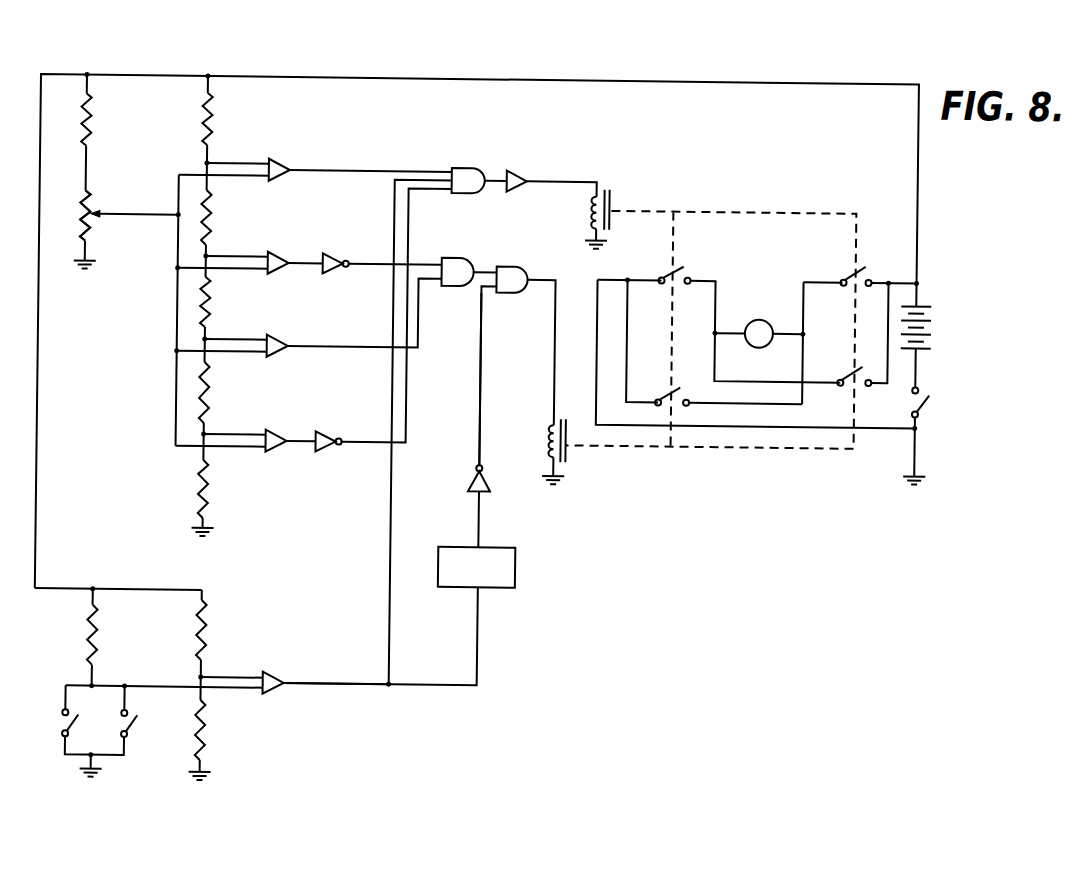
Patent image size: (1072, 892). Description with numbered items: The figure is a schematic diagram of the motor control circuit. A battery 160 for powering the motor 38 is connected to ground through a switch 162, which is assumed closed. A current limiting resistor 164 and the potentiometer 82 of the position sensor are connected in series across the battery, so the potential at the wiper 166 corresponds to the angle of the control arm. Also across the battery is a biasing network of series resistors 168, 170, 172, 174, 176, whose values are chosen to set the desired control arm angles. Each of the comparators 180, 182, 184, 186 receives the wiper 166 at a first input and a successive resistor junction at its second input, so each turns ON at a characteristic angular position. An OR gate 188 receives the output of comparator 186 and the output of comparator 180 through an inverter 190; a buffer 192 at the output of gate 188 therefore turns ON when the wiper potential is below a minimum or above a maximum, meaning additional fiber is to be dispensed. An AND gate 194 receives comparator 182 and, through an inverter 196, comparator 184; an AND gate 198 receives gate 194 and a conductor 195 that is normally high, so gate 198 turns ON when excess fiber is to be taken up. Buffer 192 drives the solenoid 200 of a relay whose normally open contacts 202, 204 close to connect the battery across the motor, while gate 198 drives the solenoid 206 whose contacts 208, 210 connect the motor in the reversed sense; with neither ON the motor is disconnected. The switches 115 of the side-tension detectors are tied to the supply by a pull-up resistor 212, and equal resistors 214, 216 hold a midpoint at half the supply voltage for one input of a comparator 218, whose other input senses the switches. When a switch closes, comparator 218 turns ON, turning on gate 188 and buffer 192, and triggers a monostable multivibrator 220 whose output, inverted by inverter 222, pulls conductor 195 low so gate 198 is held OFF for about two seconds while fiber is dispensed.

The motor 38 is at (754, 313).
The potentiometer 82 is at (97, 229).
The switches 115 is at (154, 724).
The battery 160 is at (933, 330).
The switch 162 is at (934, 390).
The current limiting resistor 164 is at (95, 134).
The wiper 166 is at (106, 211).
The resistor 168 is at (214, 139).
The resistor 170 is at (214, 219).
The resistor 172 is at (215, 318).
The resistor 174 is at (215, 390).
The resistor 176 is at (205, 483).
The comparator 180 is at (287, 448).
The comparator 182 is at (292, 350).
The comparator 184 is at (287, 270).
The comparator 186 is at (286, 176).
The OR gate 188 is at (479, 162).
The inverter 190 is at (341, 447).
The buffer 192 is at (513, 164).
The AND gate 194 is at (452, 252).
The conductor 195 is at (483, 440).
The inverter 196 is at (333, 249).
The AND gate 198 is at (500, 288).
The solenoid 200 is at (594, 199).
The normally open contact 202 is at (683, 276).
The normally open contact 204 is at (860, 268).
The solenoid 206 is at (552, 434).
The normally open contact 208 is at (672, 383).
The normally open contact 210 is at (862, 337).
The pull-up resistor 212 is at (107, 619).
The resistor 214 is at (217, 623).
The resistor 216 is at (218, 738).
The comparator 218 is at (279, 653).
The monostable multivibrator 220 is at (522, 559).
The inverter 222 is at (495, 481).